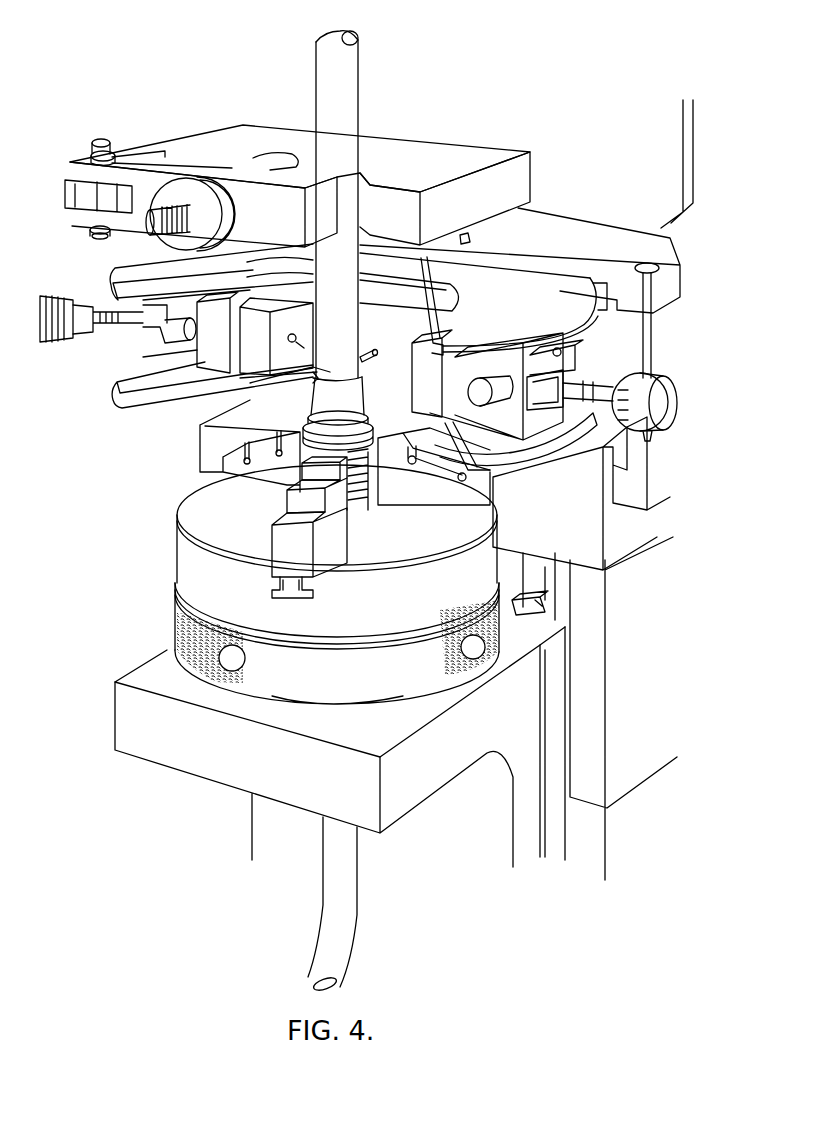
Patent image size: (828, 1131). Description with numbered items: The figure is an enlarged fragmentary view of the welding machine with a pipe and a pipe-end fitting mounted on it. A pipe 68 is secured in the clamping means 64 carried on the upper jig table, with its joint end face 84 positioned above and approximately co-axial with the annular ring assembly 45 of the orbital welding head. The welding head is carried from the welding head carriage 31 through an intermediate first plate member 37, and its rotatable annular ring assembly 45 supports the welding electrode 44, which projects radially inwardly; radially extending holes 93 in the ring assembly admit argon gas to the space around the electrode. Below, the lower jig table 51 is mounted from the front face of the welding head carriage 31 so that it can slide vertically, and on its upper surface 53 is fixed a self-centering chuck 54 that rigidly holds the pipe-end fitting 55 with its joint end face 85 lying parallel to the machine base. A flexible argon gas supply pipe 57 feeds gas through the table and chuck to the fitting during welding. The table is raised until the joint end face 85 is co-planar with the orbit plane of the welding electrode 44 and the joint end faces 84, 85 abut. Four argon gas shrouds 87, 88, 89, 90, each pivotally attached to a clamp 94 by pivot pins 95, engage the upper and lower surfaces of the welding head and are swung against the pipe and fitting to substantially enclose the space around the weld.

The welding head carriage 31 is at (600, 621).
The first plate member 37 is at (586, 489).
The welding electrode 44 is at (378, 362).
The annular ring assembly 45 is at (265, 354).
The lower jig table 51 is at (258, 774).
The upper surface 53 is at (143, 672).
The self-centering chuck 54 is at (236, 597).
The pipe-end fitting 55 is at (360, 414).
The flexible argon gas supply pipe 57 is at (333, 904).
The clamping means 64 is at (207, 152).
The pipe 68 is at (350, 99).
The joint end face 84 is at (333, 377).
The joint end face 85 is at (337, 396).
The argon gas shroud 87 is at (120, 266).
The argon gas shroud 88 is at (562, 304).
The argon gas shroud 89 is at (508, 443).
The argon gas shroud 90 is at (148, 387).
The radially extending holes 93 is at (300, 343).
The clamp 94 is at (627, 262).
The pivot pins 95 is at (465, 237).